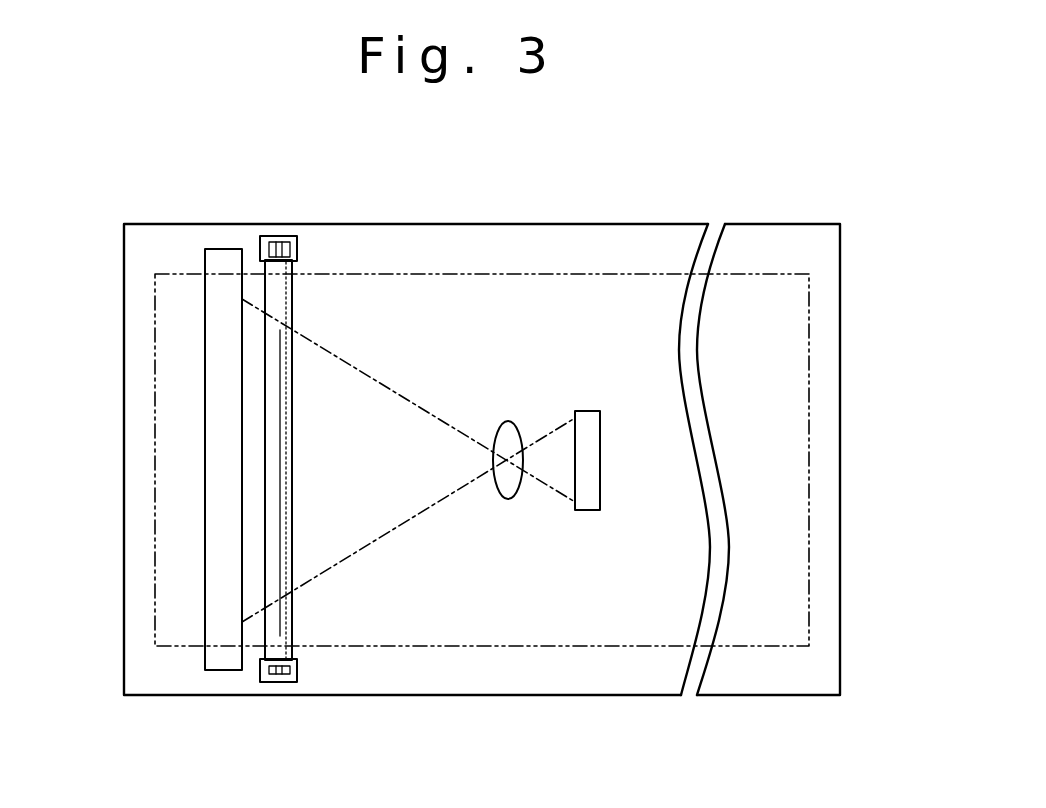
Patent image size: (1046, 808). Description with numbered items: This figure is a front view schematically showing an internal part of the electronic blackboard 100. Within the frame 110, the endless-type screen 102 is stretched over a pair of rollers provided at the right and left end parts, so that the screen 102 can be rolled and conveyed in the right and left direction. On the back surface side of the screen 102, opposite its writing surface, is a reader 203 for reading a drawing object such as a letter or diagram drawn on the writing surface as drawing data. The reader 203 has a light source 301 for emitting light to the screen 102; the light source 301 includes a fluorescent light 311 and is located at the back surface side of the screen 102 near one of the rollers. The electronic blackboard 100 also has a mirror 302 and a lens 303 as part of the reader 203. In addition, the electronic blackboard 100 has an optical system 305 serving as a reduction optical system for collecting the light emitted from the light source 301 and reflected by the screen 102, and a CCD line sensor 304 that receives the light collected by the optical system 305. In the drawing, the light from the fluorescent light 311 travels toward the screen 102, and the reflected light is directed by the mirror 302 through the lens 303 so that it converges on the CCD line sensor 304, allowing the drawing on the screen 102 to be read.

The electronic blackboard 100 is at (607, 202).
The frame 110 is at (840, 274).
The screen 102 is at (809, 412).
The light source 301 is at (307, 380).
The mirror 302 is at (207, 661).
The optical system 305 is at (505, 442).
The fluorescent light 311 is at (273, 386).
The reader 203 is at (405, 555).
The lens 303 is at (508, 500).
The CCD line sensor 304 is at (583, 510).